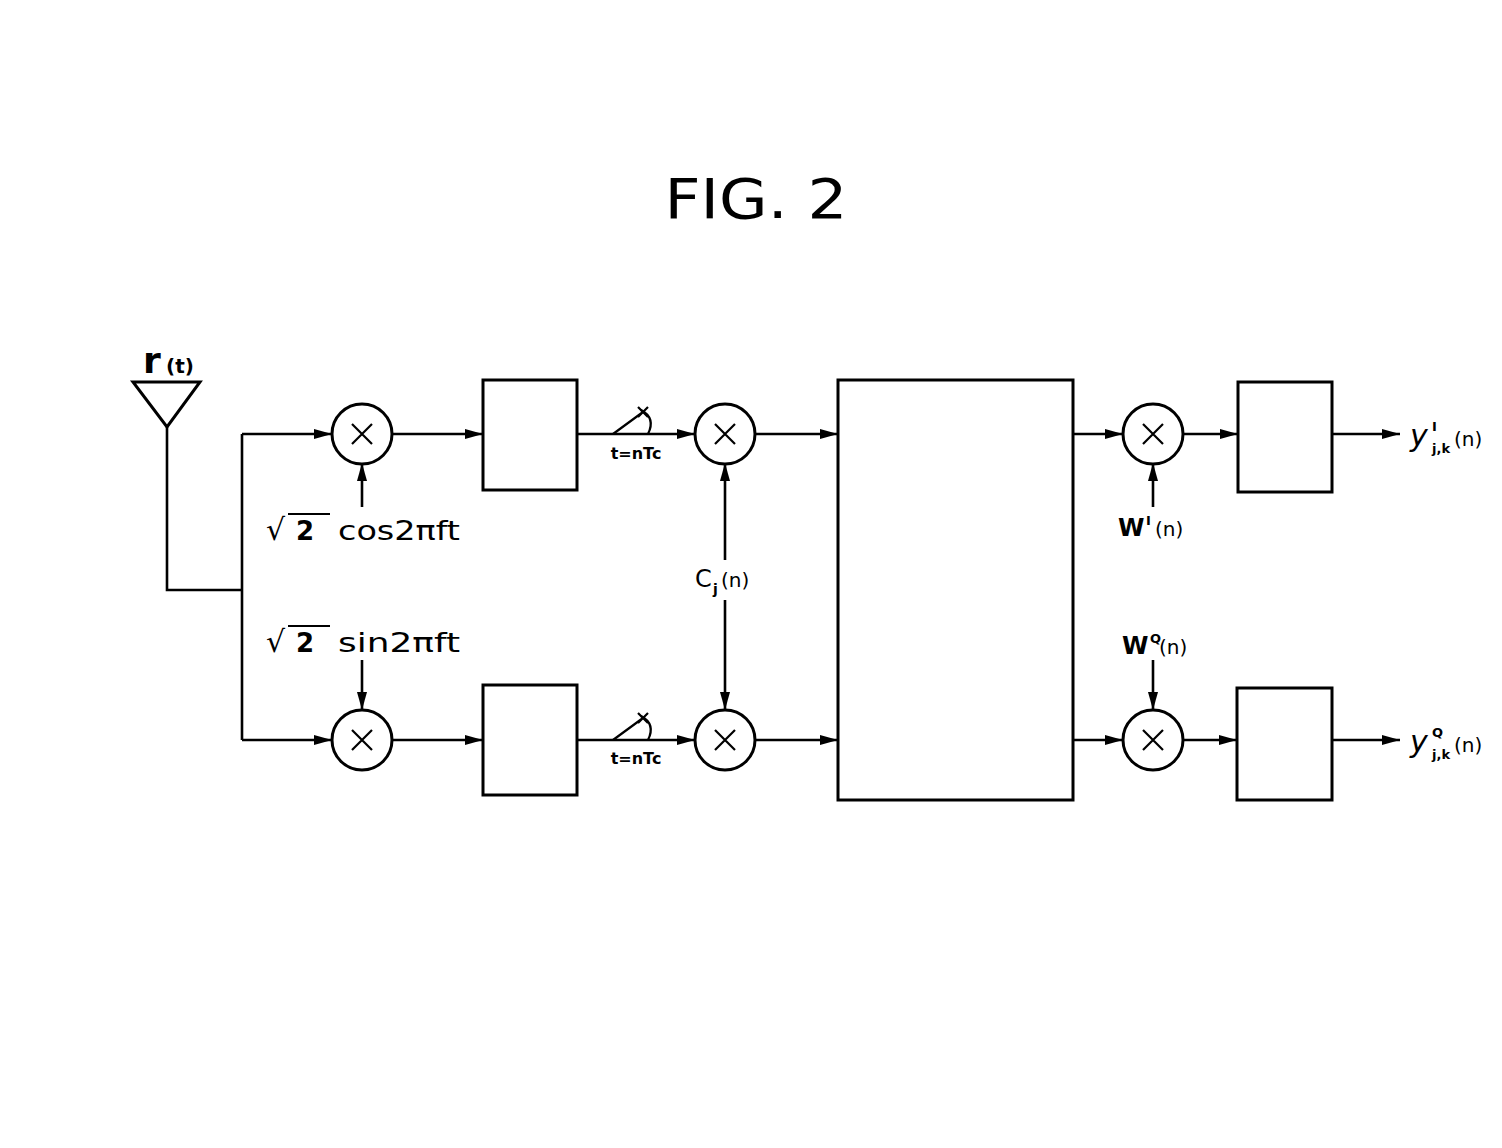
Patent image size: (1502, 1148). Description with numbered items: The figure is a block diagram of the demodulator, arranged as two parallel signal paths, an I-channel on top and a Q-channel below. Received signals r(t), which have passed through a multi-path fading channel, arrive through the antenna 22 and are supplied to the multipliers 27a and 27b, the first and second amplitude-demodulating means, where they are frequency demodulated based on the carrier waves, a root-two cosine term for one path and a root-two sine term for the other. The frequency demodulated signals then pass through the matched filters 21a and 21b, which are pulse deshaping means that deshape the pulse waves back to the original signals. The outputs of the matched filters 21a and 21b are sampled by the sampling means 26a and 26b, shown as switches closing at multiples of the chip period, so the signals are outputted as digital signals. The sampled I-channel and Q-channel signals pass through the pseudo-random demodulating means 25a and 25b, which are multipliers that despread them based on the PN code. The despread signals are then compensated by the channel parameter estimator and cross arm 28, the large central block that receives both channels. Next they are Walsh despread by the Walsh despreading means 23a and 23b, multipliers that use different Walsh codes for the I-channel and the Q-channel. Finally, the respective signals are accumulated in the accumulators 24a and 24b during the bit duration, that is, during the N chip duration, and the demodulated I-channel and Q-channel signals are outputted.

The antenna 22 is at (198, 395).
The multiplier 27a is at (361, 404).
The multiplier 27b is at (362, 770).
The matched filter 21a is at (532, 380).
The matched filter 21b is at (530, 795).
The sampling means 26a is at (615, 432).
The sampling means 26b is at (615, 722).
The pseudo-random demodulating means 25a is at (723, 404).
The pseudo-random demodulating means 25b is at (732, 770).
The channel parameter estimator and cross arm 28 is at (1018, 380).
The Walsh despreading means 23a is at (1153, 405).
The Walsh despreading means 23b is at (1153, 770).
The accumulator 24a is at (1298, 382).
The accumulator 24b is at (1297, 688).